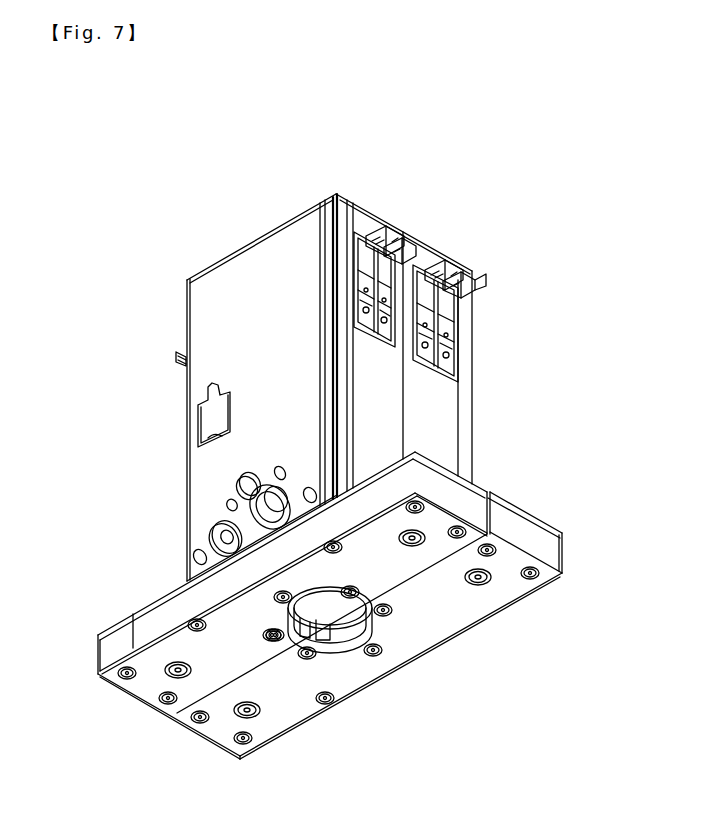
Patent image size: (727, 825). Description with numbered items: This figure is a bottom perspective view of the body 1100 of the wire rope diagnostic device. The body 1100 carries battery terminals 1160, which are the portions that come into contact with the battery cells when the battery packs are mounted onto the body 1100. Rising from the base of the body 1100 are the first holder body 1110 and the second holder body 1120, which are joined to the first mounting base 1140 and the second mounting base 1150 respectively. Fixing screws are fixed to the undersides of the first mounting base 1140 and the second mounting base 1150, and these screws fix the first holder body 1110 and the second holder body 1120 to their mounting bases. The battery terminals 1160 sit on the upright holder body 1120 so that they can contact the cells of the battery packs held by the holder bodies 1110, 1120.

The body 1100 is at (425, 177).
The first holder body 1110 is at (206, 318).
The second holder body 1120 is at (465, 380).
The first mounting base 1140 is at (123, 626).
The second mounting base 1150 is at (537, 527).
The battery terminals 1160 is at (466, 272).